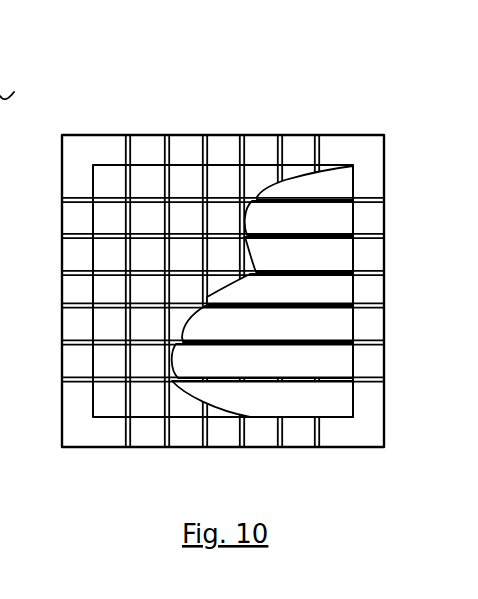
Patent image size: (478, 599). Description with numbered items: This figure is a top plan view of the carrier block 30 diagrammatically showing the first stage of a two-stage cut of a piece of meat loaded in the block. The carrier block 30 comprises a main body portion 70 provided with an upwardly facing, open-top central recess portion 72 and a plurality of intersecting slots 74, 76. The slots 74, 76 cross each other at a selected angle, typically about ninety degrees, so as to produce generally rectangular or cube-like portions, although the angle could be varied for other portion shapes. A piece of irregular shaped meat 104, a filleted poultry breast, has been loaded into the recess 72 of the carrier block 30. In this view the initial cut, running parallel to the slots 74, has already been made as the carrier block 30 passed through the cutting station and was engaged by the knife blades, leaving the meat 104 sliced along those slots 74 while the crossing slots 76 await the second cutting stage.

The carrier block 30 is at (290, 108).
The main body portion 70 is at (384, 428).
The central recess portion 72 is at (97, 186).
The slots 74 is at (365, 195).
The slots 76 is at (127, 430).
The piece of irregular shaped meat 104 is at (327, 404).